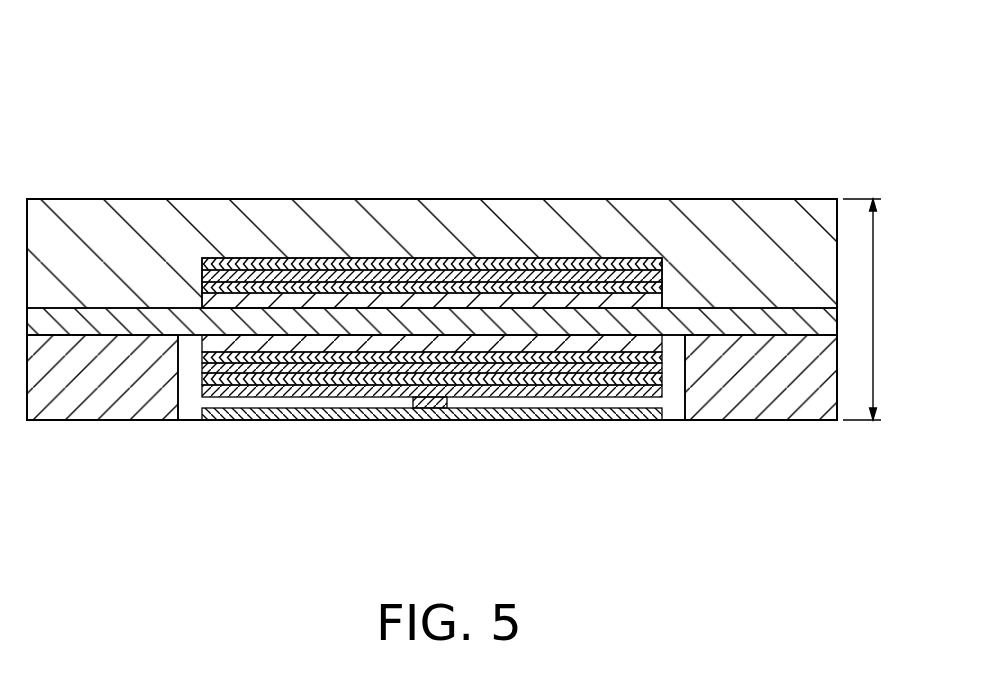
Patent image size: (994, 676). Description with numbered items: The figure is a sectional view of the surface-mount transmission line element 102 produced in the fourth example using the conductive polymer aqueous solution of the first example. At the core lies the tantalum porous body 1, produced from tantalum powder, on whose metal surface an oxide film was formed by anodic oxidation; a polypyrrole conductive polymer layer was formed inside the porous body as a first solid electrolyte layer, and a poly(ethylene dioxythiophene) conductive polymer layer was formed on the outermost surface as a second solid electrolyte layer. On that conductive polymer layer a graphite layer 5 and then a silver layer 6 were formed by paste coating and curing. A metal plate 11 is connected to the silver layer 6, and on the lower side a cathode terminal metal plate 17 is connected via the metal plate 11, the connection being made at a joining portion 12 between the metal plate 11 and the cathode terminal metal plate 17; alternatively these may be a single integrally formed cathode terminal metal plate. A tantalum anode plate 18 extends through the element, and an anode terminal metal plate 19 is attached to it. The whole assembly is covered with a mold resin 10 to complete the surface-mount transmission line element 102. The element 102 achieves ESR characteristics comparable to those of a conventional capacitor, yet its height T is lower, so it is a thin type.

The surface-mount transmission line element 102 is at (570, 135).
The mold resin 10 is at (80, 220).
The tantalum anode plate 18 is at (131, 320).
The tantalum porous body 1 is at (300, 300).
The metal plate 11 is at (392, 278).
The silver layer 6 is at (497, 268).
The graphite layer 5 is at (641, 276).
The joining portion 12 is at (430, 402).
The cathode terminal metal plate 17 is at (585, 413).
The anode terminal metal plate 19 is at (765, 387).
The height T is at (875, 307).